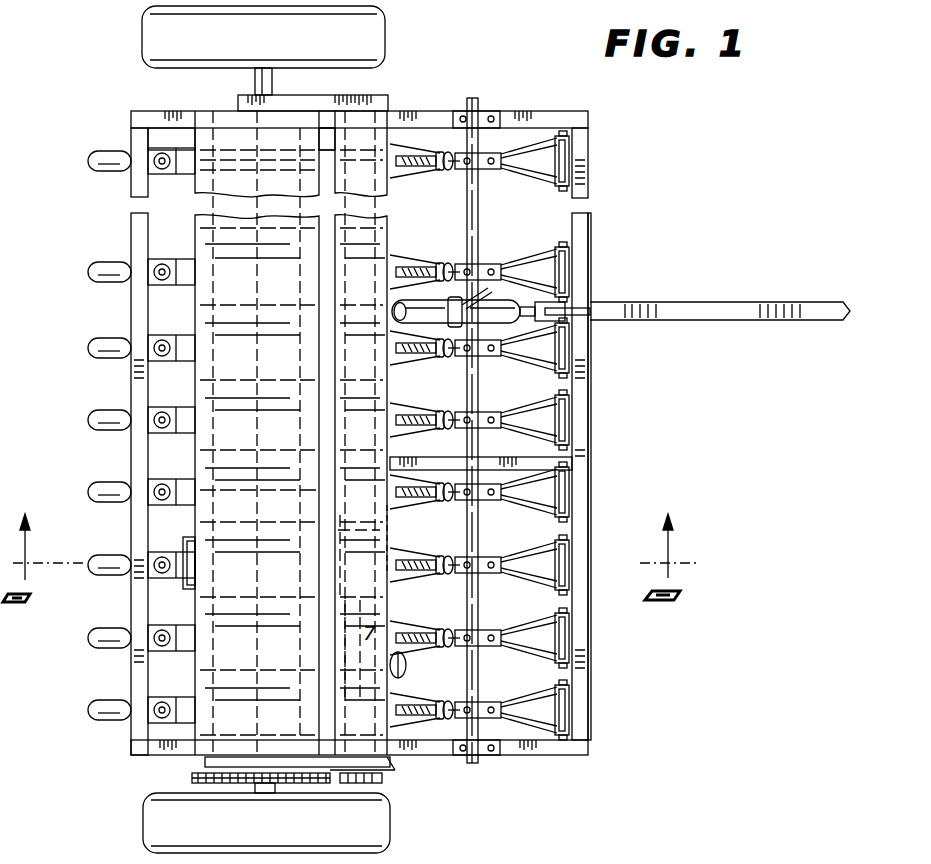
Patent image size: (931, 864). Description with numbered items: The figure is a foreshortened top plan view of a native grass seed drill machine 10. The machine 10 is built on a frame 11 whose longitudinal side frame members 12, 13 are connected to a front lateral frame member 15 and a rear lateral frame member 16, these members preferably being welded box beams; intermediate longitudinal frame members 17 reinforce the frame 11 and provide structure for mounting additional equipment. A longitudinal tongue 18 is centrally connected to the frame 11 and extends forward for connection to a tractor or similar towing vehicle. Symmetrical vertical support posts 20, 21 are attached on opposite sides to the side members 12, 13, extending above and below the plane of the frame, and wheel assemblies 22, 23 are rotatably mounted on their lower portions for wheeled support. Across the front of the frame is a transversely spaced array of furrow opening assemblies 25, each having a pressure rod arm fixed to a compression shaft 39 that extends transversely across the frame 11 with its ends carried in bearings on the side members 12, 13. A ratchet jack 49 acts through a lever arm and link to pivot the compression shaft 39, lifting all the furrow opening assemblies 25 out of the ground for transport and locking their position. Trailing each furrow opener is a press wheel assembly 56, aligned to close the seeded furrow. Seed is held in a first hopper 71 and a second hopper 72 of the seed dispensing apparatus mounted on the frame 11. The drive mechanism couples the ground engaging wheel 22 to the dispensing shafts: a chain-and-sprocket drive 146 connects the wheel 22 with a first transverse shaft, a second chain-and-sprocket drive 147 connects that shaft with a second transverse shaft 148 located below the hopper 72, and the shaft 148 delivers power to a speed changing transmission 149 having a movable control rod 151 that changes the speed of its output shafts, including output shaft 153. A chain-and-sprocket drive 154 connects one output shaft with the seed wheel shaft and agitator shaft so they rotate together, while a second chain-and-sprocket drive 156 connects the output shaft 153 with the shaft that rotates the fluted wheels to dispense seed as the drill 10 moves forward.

The native grass seed drill machine 10 is at (632, 157).
The frame 11 is at (590, 125).
The longitudinal side frame member 12 is at (451, 757).
The longitudinal side frame member 13 is at (413, 111).
The front lateral frame member 15 is at (591, 376).
The rear lateral frame member 16 is at (150, 380).
The intermediate longitudinal frame member 17 is at (178, 318).
The longitudinal tongue 18 is at (818, 302).
The vertical support post 20 is at (282, 757).
The vertical support post 21 is at (238, 102).
The wheel assembly 22 is at (143, 822).
The wheel assembly 23 is at (142, 38).
The furrow opening assembly 25 is at (553, 272).
The compression shaft 39 is at (467, 388).
The ratchet jack 49 is at (496, 300).
The press wheel assembly 56 is at (105, 172).
The first hopper 71 is at (188, 519).
The second hopper 72 is at (398, 519).
The chain-and-sprocket drive 146 is at (192, 777).
The second chain-and-sprocket drive 147 is at (300, 492).
The second transverse shaft 148 is at (390, 562).
The transmission 149 is at (385, 622).
The control rod 151 is at (406, 665).
The output shaft 153 is at (385, 765).
The chain-and-sprocket drive 154 is at (298, 784).
The second chain-and-sprocket drive 156 is at (362, 784).